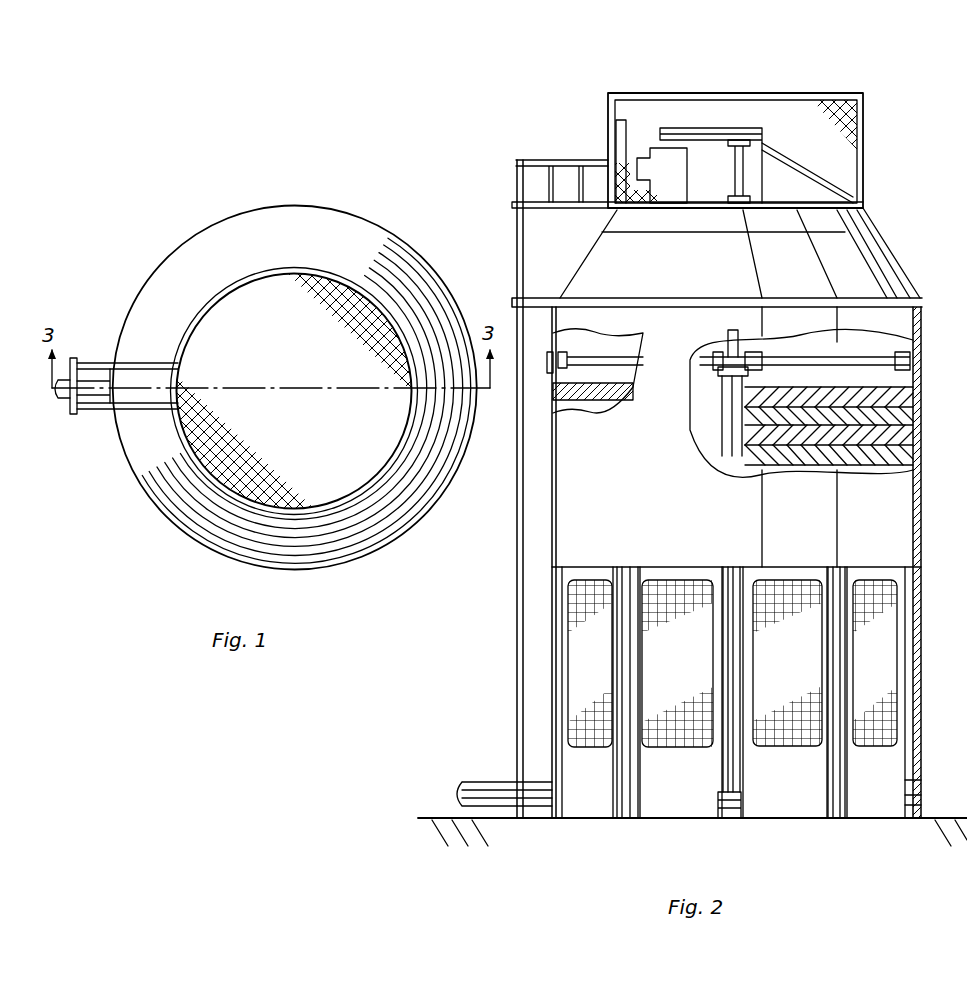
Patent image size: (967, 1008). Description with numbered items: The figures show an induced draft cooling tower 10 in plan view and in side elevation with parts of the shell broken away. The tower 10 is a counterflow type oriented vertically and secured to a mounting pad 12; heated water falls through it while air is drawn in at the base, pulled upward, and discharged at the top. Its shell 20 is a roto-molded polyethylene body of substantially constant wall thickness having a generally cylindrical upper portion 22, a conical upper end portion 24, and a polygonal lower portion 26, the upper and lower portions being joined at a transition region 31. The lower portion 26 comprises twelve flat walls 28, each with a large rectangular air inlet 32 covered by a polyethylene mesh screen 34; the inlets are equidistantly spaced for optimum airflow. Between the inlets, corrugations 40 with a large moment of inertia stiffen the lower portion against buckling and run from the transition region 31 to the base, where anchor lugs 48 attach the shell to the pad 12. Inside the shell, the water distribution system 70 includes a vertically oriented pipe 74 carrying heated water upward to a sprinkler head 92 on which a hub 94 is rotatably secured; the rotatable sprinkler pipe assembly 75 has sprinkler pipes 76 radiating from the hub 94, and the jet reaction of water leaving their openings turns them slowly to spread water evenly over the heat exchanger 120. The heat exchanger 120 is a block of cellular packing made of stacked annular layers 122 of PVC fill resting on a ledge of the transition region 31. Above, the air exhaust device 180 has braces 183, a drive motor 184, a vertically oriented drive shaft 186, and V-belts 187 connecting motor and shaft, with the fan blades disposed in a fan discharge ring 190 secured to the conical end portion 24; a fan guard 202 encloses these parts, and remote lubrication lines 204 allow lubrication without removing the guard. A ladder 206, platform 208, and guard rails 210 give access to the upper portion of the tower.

In FIG. 1, the induced draft cooling tower 10 is at (342, 192).
In FIG. 2, the induced draft cooling tower 10 is at (902, 158).
In FIG. 2, the mounting pad 12 is at (432, 816).
In FIG. 1, the shell 20 is at (382, 222).
In FIG. 2, the shell 20 is at (892, 258).
In FIG. 2, the cylindrical upper portion 22 is at (916, 398).
In FIG. 1, the conical upper end portion 24 is at (405, 265).
In FIG. 2, the conical upper end portion 24 is at (896, 292).
In FIG. 2, the polygonal lower portion 26 is at (924, 592).
In FIG. 2, the flat walls 28 is at (588, 812).
In FIG. 2, the transition region 31 is at (922, 556).
In FIG. 2, the air inlets 32 is at (568, 643).
In FIG. 2, the mesh screen 34 is at (593, 582).
In FIG. 2, the corrugations 40 is at (548, 690).
In FIG. 2, the anchor lugs 48 is at (752, 803).
In FIG. 2, the water distribution system 70 is at (762, 340).
In FIG. 2, the vertically oriented pipe 74 is at (722, 432).
In FIG. 2, the rotatable sprinkler pipe assembly 75 is at (772, 350).
In FIG. 2, the sprinkler pipes 76 is at (598, 360).
In FIG. 2, the sprinkler head 92 is at (749, 372).
In FIG. 2, the hub 94 is at (732, 352).
In FIG. 2, the heat exchanger 120 is at (798, 368).
In FIG. 2, the layers 122 is at (916, 452).
In FIG. 1, the air exhaust device 180 is at (238, 272).
In FIG. 2, the air exhaust device 180 is at (792, 88).
In FIG. 2, the braces 183 is at (790, 162).
In FIG. 2, the drive motor 184 is at (658, 150).
In FIG. 2, the drive shaft 186 is at (734, 166).
In FIG. 2, the V-belts 187 is at (706, 128).
In FIG. 2, the fan discharge ring 190 is at (864, 216).
In FIG. 1, the fan guard 202 is at (378, 330).
In FIG. 2, the fan guard 202 is at (866, 112).
In FIG. 2, the remote lubrication lines 204 is at (620, 140).
In FIG. 2, the ladder 206 is at (515, 523).
In FIG. 1, the platform 208 is at (72, 362).
In FIG. 2, the platform 208 is at (578, 206).
In FIG. 1, the guard rails 210 is at (100, 410).
In FIG. 2, the guard rails 210 is at (552, 163).